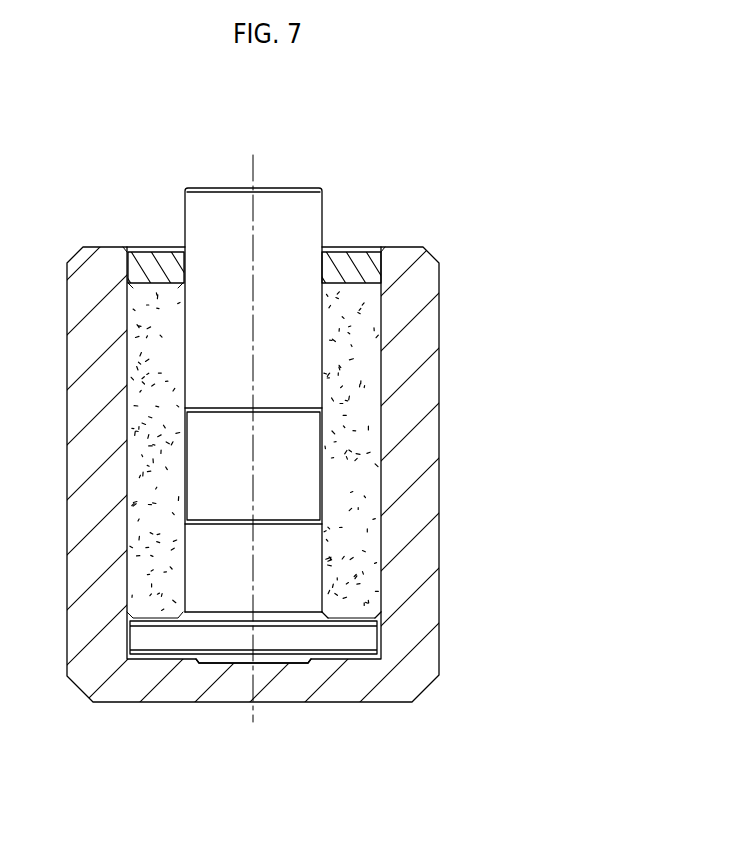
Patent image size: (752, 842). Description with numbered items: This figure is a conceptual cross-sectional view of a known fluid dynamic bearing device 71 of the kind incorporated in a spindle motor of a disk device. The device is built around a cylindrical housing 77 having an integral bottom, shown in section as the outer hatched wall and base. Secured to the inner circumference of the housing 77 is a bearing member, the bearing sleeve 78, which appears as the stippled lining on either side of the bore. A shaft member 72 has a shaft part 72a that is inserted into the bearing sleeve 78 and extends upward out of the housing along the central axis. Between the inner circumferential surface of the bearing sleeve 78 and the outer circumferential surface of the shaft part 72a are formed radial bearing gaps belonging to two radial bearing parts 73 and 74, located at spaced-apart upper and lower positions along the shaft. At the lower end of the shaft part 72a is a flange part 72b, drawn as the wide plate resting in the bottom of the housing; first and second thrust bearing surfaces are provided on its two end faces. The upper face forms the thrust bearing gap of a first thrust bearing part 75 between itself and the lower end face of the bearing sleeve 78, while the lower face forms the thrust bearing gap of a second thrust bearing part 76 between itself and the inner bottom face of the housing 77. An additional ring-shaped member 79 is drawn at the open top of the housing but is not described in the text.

The fluid dynamic bearing device 71 is at (462, 246).
The shaft member 72 is at (323, 208).
The shaft part 72a is at (198, 219).
The flange part 72b is at (362, 640).
The radial bearing part 73 is at (185, 362).
The radial bearing part 74 is at (185, 565).
The first thrust bearing part 75 is at (352, 618).
The second thrust bearing part 76 is at (332, 658).
The housing 77 is at (72, 256).
The bearing sleeve 78 is at (360, 373).
The seal ring 79 is at (352, 258).